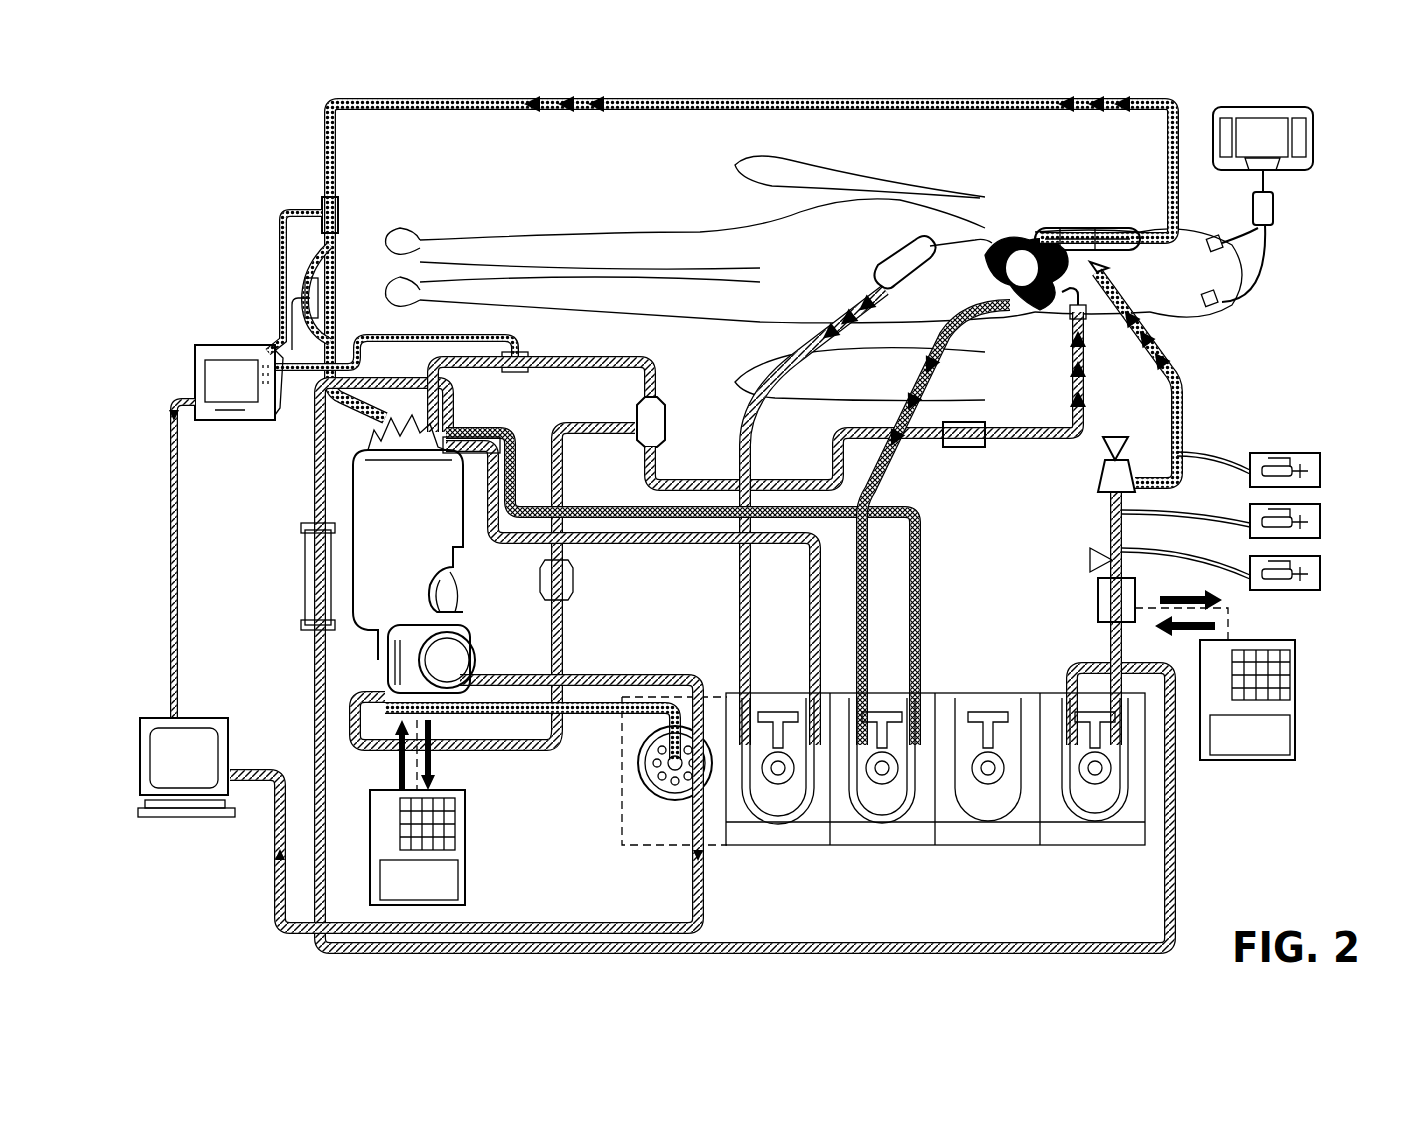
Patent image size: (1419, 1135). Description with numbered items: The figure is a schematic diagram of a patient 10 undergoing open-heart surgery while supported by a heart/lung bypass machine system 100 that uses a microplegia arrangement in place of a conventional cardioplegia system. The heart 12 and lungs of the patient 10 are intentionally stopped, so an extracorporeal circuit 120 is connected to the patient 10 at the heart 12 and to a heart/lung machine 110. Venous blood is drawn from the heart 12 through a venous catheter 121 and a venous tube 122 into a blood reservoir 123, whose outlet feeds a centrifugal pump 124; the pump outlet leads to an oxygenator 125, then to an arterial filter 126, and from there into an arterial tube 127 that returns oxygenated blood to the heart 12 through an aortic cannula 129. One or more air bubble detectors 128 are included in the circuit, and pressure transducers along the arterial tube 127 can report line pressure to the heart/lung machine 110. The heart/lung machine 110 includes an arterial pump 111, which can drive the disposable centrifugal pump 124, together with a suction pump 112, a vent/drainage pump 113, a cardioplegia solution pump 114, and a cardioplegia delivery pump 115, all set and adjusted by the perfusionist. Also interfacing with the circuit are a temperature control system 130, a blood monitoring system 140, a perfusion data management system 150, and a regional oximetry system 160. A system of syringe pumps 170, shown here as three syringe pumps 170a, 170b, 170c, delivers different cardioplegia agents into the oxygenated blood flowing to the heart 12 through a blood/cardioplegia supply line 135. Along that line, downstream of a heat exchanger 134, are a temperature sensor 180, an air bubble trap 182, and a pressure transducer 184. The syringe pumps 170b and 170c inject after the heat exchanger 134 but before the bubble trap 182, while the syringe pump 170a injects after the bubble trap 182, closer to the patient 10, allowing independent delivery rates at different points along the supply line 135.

The patient 10 is at (705, 190).
The heart 12 is at (1000, 240).
The heart/lung bypass machine system 100 is at (205, 175).
The heart/lung machine 110 is at (1102, 875).
The arterial pump 111 is at (712, 852).
The suction pump 112 is at (772, 845).
The vent/drainage pump 113 is at (880, 845).
The cardioplegia solution pump 114 is at (988, 845).
The cardioplegia delivery pump 115 is at (1128, 845).
The extracorporeal circuit 120 is at (320, 142).
The venous catheter 121 is at (1130, 228).
The venous tube 122 is at (450, 117).
The blood reservoir 123 is at (424, 502).
The centrifugal pump 124 is at (662, 800).
The oxygenator 125 is at (465, 655).
The arterial filter 126 is at (644, 404).
The arterial tube 127 is at (832, 470).
The air bubble detector 128 is at (970, 448).
The aortic cannula 129 is at (1075, 275).
The temperature control system 130 is at (472, 830).
The heat exchanger 134 is at (1098, 612).
The blood/cardioplegia supply line 135 is at (1182, 398).
The blood monitoring system 140 is at (192, 358).
The perfusion data management system 150 is at (140, 715).
The regional oximetry system 160 is at (1316, 128).
The system of syringe pumps 170 is at (1269, 475).
The syringe pump 170a is at (1322, 470).
The syringe pump 170b is at (1322, 521).
The syringe pump 170c is at (1322, 573).
The temperature sensor 180 is at (1088, 560).
The air bubble trap 182 is at (1095, 478).
The pressure transducer 184 is at (1100, 450).